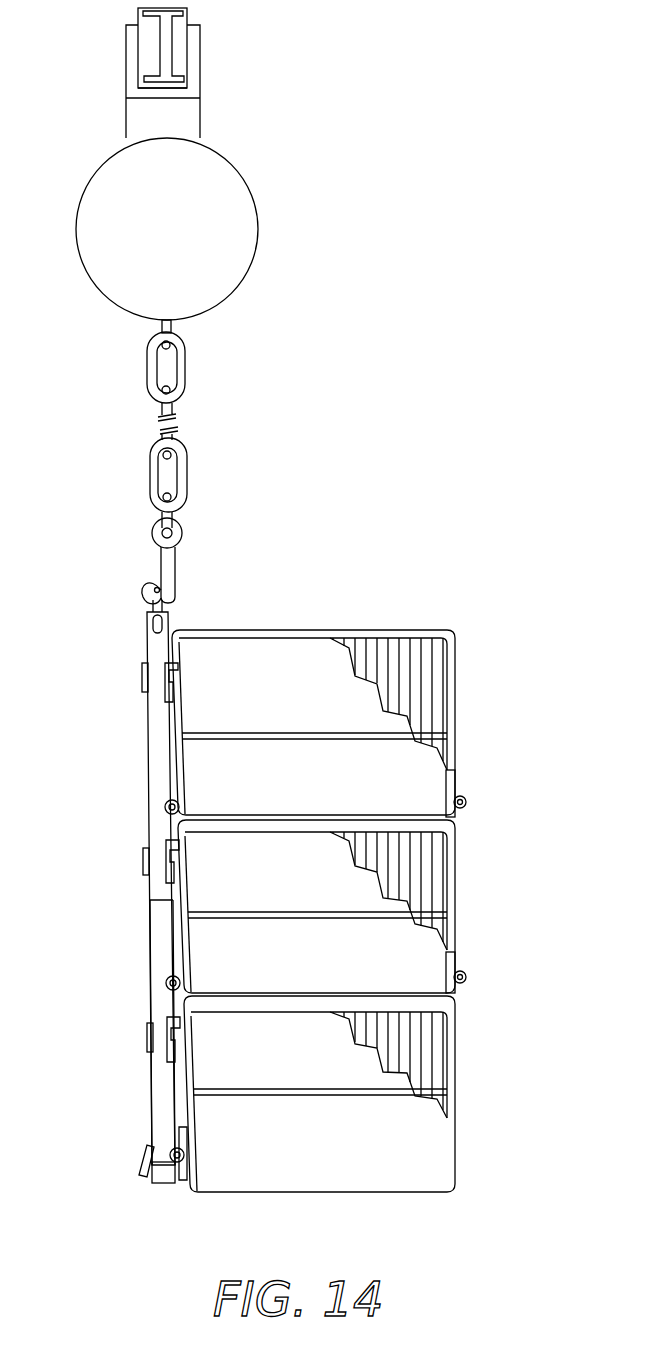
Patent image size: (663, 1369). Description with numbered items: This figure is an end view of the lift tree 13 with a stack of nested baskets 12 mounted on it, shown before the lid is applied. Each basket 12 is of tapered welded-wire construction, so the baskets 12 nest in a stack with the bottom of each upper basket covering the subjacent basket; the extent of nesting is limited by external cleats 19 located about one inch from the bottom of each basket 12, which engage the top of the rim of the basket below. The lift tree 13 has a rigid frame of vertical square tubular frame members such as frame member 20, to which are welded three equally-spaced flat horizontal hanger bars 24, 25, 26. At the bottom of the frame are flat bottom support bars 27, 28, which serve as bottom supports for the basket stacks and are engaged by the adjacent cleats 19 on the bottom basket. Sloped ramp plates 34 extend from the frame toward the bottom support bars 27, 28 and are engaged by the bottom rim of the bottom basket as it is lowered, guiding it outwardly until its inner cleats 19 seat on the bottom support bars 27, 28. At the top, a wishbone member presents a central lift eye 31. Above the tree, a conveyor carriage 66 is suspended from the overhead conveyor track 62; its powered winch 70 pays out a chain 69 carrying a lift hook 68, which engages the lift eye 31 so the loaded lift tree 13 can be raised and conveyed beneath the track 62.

The basket 12 is at (393, 637).
The lift tree 13 is at (160, 765).
The external cleat 19 is at (462, 793).
The vertical square tubular frame member 20 is at (160, 947).
The horizontal hanger bar 24 is at (142, 672).
The horizontal hanger bar 25 is at (143, 862).
The horizontal hanger bar 26 is at (147, 1042).
The bottom support bar 27 is at (182, 1183).
The bottom support bar 28 is at (152, 1175).
The lift eye 31 is at (157, 587).
The sloped ramp plate 34 is at (145, 1153).
The overhead conveyor track 62 is at (172, 21).
The conveyor carriage 66 is at (182, 112).
The lift hook 68 is at (183, 537).
The chain 69 is at (185, 368).
The powered winch 70 is at (217, 199).